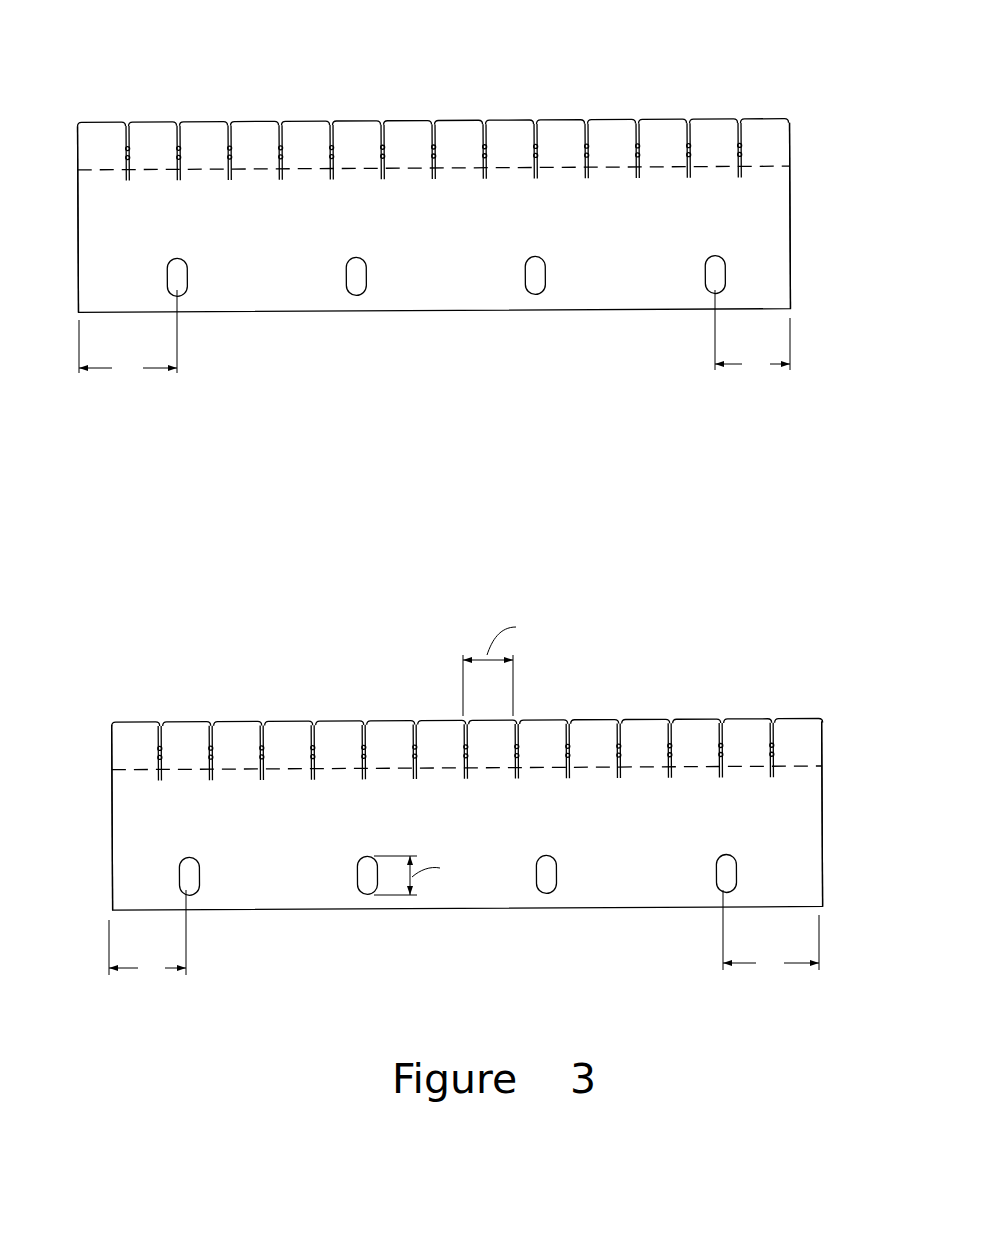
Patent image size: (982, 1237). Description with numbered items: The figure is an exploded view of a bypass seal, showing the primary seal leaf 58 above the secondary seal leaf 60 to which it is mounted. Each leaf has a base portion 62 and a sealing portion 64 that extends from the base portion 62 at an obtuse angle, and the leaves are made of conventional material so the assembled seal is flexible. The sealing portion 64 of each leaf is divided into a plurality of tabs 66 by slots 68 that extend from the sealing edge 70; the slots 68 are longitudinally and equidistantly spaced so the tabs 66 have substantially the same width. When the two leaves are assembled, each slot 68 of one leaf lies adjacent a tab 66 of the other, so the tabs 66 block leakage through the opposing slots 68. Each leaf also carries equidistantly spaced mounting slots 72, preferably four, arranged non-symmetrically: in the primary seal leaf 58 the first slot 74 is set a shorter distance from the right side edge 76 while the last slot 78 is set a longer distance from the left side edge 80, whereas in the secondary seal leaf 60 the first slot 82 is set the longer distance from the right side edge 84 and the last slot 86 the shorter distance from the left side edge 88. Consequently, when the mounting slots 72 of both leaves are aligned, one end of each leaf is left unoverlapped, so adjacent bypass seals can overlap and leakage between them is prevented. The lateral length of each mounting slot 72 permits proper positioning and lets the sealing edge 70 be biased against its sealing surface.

The primary seal leaf 58 is at (270, 48).
The secondary seal leaf 60 is at (272, 647).
The base portion 62 is at (773, 205).
The sealing portion 64 is at (762, 130).
The tab 66 is at (255, 133).
The slot 68 is at (333, 162).
The sealing edge 70 is at (450, 130).
The mounting slot 72 is at (533, 265).
The first slot 74 is at (712, 265).
The right side edge 76 is at (791, 262).
The last slot 78 is at (172, 262).
The left side edge 80 is at (78, 140).
The first slot 82 is at (728, 860).
The right side edge 84 is at (819, 808).
The last slot 86 is at (183, 868).
The left side edge 88 is at (109, 865).